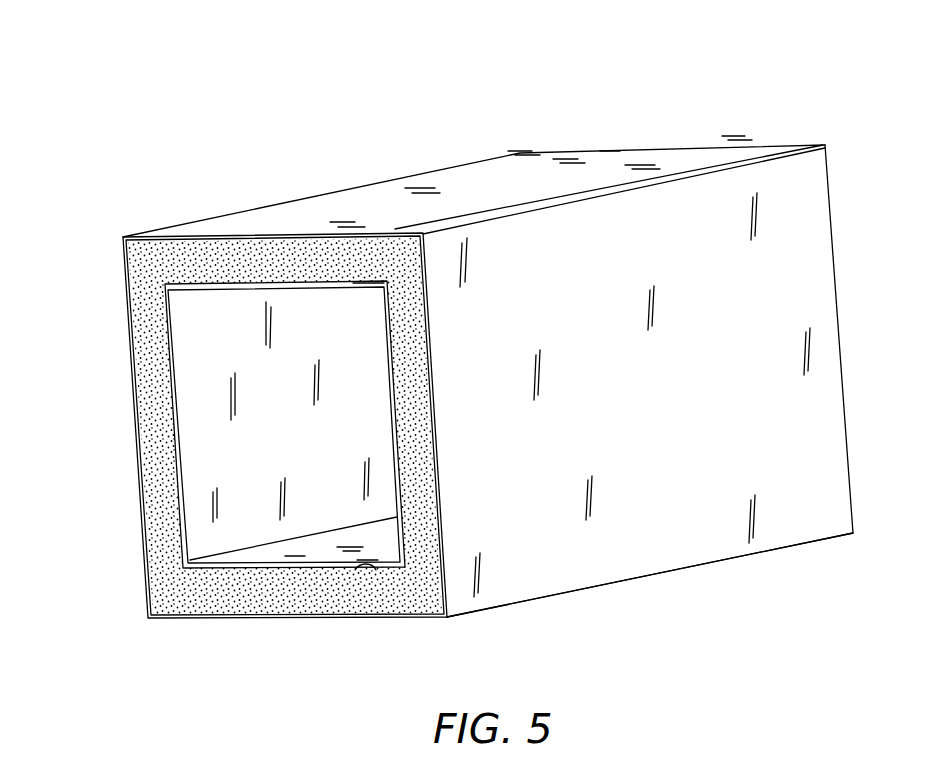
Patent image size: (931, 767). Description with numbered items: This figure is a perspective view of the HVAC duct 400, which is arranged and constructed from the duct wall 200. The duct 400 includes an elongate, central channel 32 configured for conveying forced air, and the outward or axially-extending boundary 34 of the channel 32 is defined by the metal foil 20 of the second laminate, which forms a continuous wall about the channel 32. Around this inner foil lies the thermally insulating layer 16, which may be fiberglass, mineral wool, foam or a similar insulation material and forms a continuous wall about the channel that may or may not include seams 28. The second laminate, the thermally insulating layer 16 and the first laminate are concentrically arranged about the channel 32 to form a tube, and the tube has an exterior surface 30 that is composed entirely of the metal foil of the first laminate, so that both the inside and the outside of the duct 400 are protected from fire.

The HVAC duct 400 is at (629, 109).
The exterior surface 30 is at (480, 198).
The seams 28 is at (172, 253).
The thermally insulating layer 16 is at (130, 377).
The central channel 32 is at (405, 235).
The axially-extending boundary 34 is at (227, 322).
The metal foil 20 is at (373, 575).
The duct wall 200 is at (447, 617).